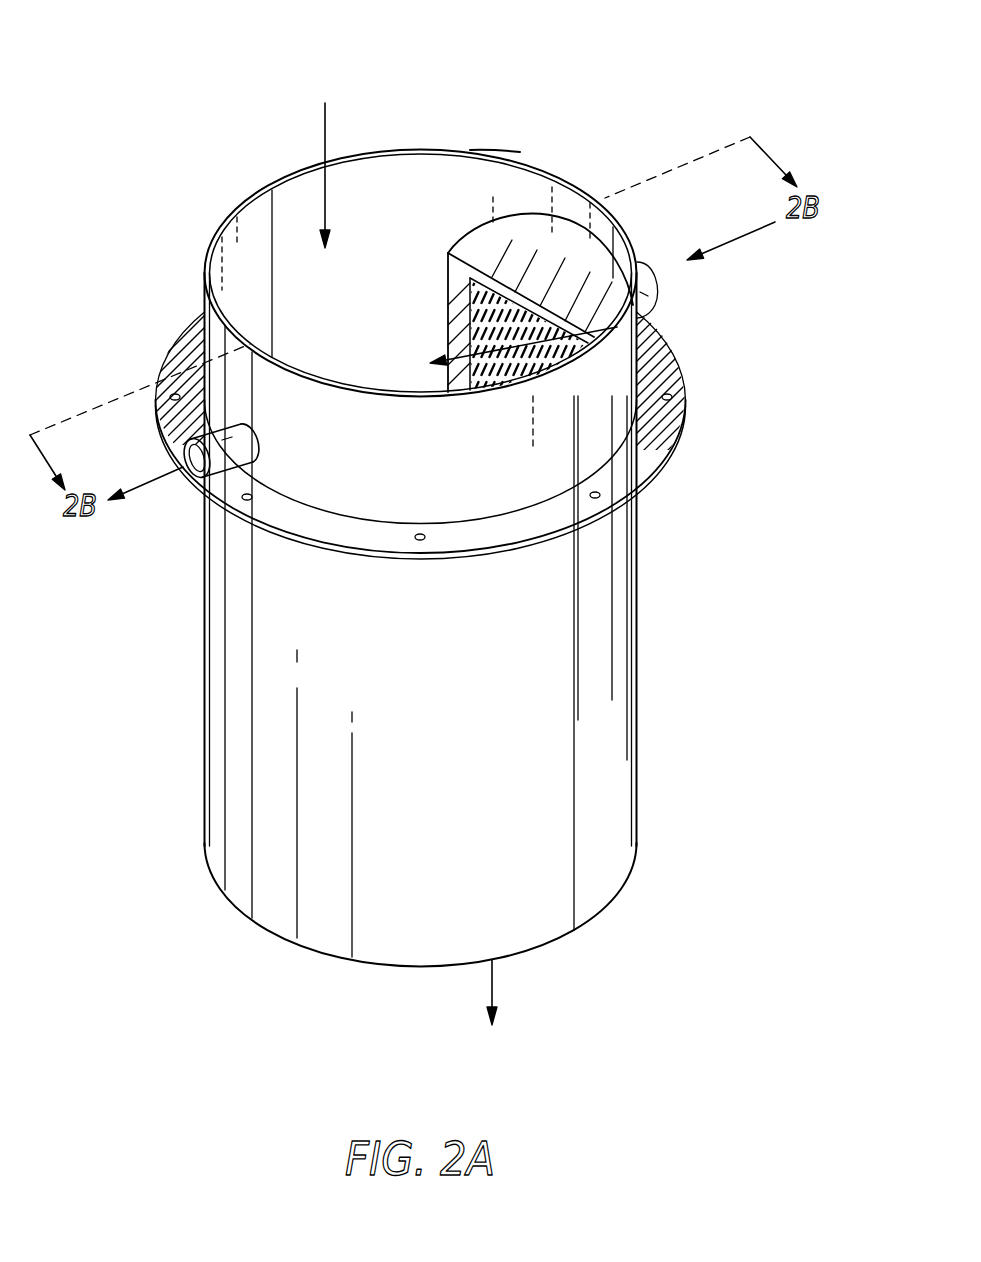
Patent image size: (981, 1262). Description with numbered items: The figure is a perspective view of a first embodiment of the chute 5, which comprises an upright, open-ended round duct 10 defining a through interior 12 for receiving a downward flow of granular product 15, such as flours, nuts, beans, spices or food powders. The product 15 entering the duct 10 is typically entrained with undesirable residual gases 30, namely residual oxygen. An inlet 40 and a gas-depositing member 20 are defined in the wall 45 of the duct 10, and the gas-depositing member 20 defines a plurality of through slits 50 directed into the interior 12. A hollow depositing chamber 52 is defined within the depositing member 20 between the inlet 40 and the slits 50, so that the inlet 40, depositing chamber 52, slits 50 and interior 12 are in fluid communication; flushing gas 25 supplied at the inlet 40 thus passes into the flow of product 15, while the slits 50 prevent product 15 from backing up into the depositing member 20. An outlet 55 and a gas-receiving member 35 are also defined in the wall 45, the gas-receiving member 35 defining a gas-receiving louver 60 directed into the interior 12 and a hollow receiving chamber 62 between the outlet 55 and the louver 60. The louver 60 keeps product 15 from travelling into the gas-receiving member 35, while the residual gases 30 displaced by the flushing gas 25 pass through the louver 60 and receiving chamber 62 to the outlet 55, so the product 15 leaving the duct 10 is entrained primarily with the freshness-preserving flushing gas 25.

The chute 5 is at (736, 38).
The duct 10 is at (190, 323).
The interior 12 is at (347, 192).
The granular product 15 is at (323, 136).
The gas-depositing member 20 is at (610, 276).
The flushing gas 25 is at (507, 335).
The residual gases 30 is at (147, 488).
The gas-receiving member 35 is at (292, 412).
The inlet 40 is at (648, 262).
The wall 45 is at (497, 153).
The through slits 50 is at (540, 383).
The depositing chamber 52 is at (560, 242).
The outlet 55 is at (187, 443).
The gas-receiving louver 60 is at (327, 447).
The receiving chamber 62 is at (333, 440).